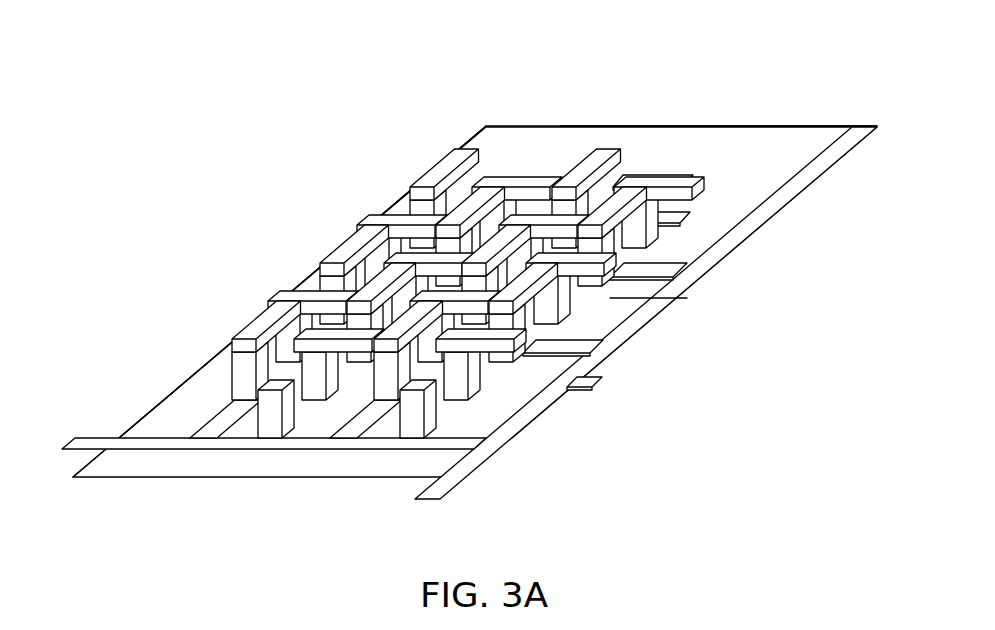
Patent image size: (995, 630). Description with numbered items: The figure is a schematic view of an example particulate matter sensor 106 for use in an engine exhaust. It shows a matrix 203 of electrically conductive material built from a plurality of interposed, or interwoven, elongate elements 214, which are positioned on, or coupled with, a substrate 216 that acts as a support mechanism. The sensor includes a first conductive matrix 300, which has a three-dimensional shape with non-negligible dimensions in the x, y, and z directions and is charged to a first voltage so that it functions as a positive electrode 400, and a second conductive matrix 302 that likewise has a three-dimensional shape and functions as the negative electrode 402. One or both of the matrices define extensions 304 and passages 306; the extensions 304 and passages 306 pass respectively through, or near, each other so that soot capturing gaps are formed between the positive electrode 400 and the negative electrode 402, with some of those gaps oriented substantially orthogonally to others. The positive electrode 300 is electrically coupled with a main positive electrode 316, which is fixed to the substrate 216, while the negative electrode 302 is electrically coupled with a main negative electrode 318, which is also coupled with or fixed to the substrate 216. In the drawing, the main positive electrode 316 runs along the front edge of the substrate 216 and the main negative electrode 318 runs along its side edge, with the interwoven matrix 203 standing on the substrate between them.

The particulate matter sensor 106 is at (460, 303).
The matrix of electrically conductive material 203 is at (533, 257).
The interwoven elongate elements 214 is at (270, 297).
The substrate 216 is at (183, 383).
The first conductive matrix 300 is at (475, 328).
The positive electrode 400 is at (340, 478).
The second conductive matrix 302 is at (630, 393).
The negative electrode 402 is at (597, 385).
The extensions 304 is at (595, 345).
The passages 306 is at (657, 318).
The main positive electrode 316 is at (73, 452).
The main negative electrode 318 is at (453, 485).